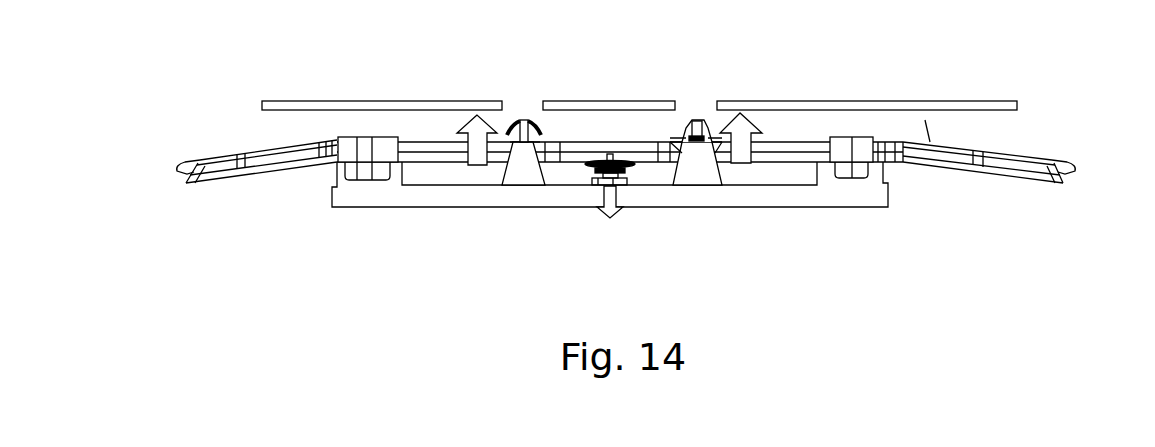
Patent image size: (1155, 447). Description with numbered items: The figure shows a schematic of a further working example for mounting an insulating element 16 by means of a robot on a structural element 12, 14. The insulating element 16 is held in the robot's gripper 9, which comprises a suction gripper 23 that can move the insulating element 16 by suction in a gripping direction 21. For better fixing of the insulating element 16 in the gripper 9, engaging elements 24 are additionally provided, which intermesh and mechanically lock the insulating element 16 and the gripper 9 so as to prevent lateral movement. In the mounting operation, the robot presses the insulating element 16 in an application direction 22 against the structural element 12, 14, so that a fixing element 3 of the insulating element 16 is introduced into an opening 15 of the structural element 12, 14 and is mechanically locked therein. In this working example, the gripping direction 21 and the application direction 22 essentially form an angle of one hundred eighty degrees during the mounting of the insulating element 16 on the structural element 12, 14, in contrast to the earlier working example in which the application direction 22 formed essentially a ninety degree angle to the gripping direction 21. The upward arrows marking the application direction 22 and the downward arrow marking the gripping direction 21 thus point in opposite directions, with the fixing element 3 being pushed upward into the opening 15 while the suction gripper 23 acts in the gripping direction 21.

The fixing element 3 is at (522, 117).
The gripper 9 is at (806, 240).
The structural element 12 is at (700, 114).
The structural element 14 is at (1018, 106).
The opening 15 is at (697, 118).
The insulating element 16 is at (237, 124).
The gripping direction 21 is at (607, 219).
The application direction 22 is at (479, 113).
The suction gripper 23 is at (622, 190).
The engaging element 24 is at (523, 163).